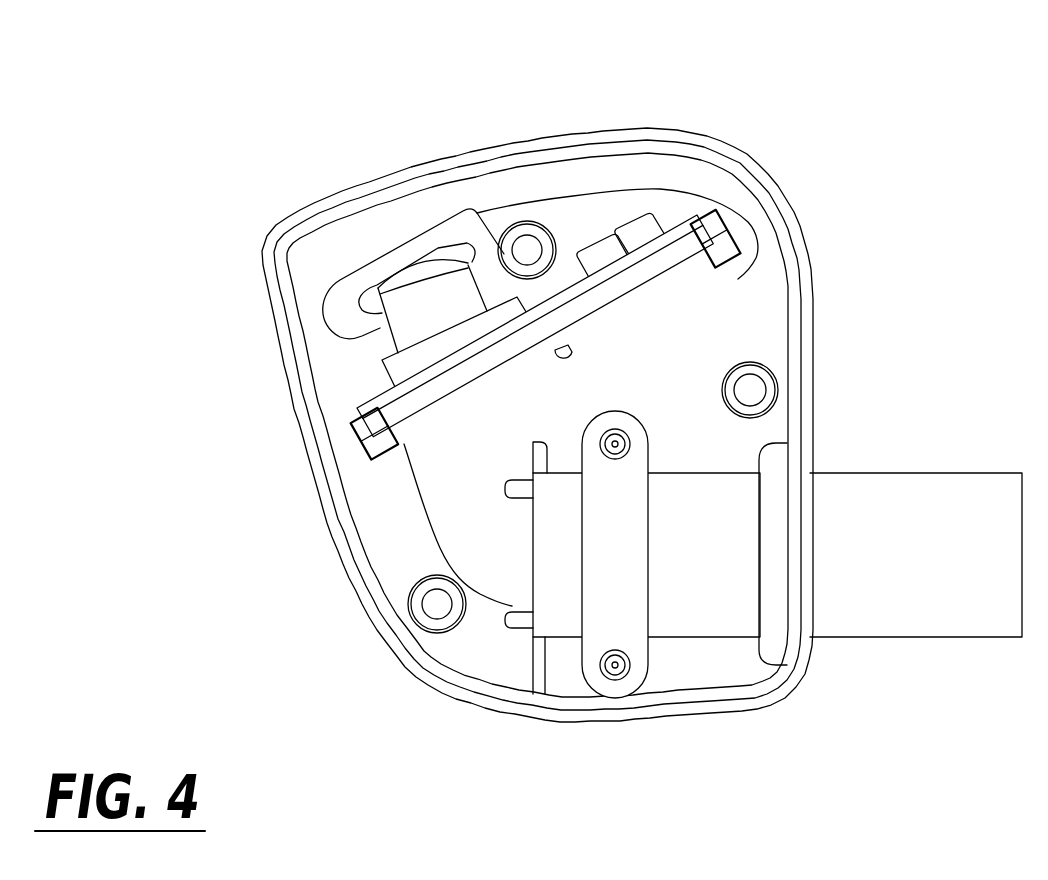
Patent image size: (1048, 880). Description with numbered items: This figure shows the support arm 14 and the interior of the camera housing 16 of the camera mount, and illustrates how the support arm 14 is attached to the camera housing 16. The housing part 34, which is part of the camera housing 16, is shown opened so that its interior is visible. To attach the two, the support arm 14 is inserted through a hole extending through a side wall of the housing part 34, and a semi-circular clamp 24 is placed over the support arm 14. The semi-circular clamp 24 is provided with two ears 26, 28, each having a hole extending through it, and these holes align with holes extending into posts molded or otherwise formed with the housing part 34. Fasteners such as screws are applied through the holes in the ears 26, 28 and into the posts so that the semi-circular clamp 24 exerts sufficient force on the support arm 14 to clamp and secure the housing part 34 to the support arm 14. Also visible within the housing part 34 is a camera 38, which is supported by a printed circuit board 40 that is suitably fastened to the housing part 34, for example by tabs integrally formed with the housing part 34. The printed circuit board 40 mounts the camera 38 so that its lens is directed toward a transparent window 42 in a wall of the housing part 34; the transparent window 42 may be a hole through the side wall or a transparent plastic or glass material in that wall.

The support arm 14 is at (938, 597).
The camera housing 16 is at (491, 388).
The semi-circular clamp 24 is at (612, 587).
The ear 26 is at (631, 449).
The ear 28 is at (600, 672).
The housing part 34 is at (284, 362).
The camera 38 is at (453, 280).
The printed circuit board 40 is at (702, 255).
The transparent window 42 is at (343, 152).